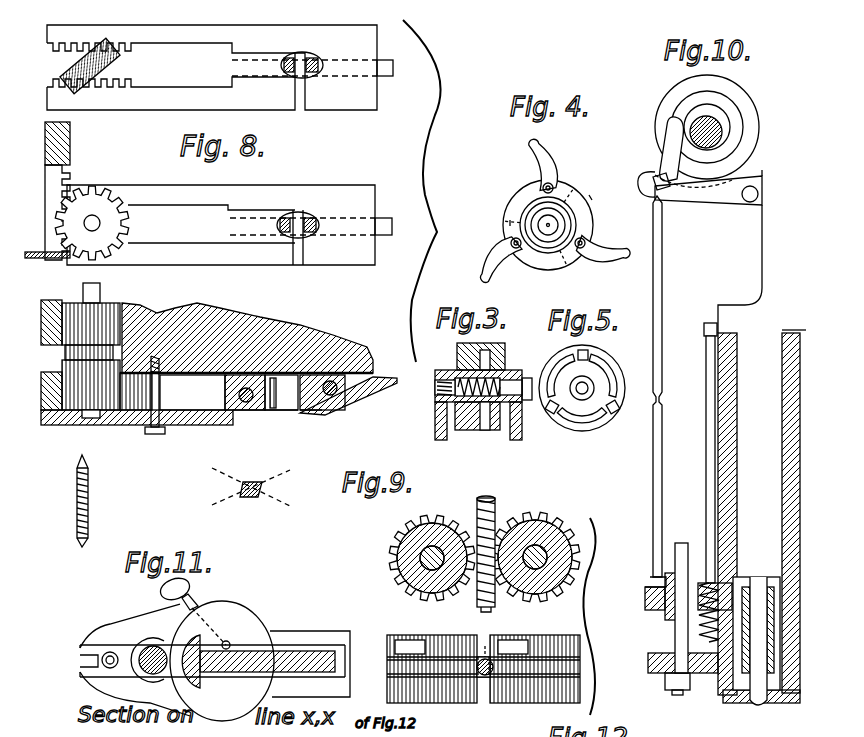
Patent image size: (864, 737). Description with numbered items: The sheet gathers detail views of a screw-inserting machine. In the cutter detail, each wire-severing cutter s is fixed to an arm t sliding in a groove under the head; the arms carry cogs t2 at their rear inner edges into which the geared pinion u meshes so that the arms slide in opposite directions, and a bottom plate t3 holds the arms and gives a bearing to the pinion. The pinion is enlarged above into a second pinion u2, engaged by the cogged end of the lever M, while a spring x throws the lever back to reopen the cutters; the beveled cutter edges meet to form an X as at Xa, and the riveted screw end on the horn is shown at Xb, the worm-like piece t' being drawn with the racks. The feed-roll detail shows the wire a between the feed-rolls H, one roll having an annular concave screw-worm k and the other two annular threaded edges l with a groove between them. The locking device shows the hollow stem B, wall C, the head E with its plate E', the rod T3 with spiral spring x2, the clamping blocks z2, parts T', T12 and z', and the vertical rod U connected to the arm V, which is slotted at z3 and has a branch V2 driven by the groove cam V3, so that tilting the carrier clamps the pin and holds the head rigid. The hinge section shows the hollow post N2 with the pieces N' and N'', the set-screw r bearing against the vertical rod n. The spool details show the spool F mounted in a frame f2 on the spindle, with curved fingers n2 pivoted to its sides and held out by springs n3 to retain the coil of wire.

In FIG. 8, the arm t is at (220, 217).
In FIG. 8, the worm screw t' is at (71, 65).
In FIG. 8, the cogs t2 is at (135, 205).
In FIG. 8, the bottom plate t3 is at (137, 427).
In FIG. 8, the lever M is at (70, 130).
In FIG. 8, the geared pinion u is at (91, 298).
In FIG. 8, the second pinion u2 is at (102, 277).
In FIG. 8, the spring x is at (38, 254).
In FIG. 8, the wire-severing cutters s is at (336, 404).
In FIG. 8, the X-shaped cutting-edges Xa is at (266, 472).
In FIG. 8, the riveted fastening Xb is at (97, 501).
In FIG. 9, the feed-rolls H is at (473, 602).
In FIG. 9, the wire a is at (483, 576).
In FIG. 9, the annular threaded edges l is at (400, 588).
In FIG. 9, the annular concave screw-worm k is at (563, 585).
In FIG. 10, the groove cam V3 is at (707, 127).
In FIG. 10, the branch V2 is at (672, 137).
In FIG. 10, the arm V is at (700, 190).
In FIG. 10, the slot z3 is at (663, 190).
In FIG. 10, the bracket plate E' is at (752, 269).
In FIG. 10, the vertical rod U is at (662, 330).
In FIG. 10, the hollow stem B is at (737, 475).
In FIG. 10, the outer wall C is at (799, 511).
In FIG. 10, the rod T3 is at (713, 445).
In FIG. 10, the blocks z2 is at (704, 600).
In FIG. 10, the stem T' is at (683, 609).
In FIG. 10, the bearing block T12 is at (645, 598).
In FIG. 10, the spring seat z' is at (651, 620).
In FIG. 10, the spiral spring x2 is at (700, 641).
In FIG. 11, the head E is at (215, 661).
In FIG. 11, the cam N' is at (177, 653).
In FIG. 11, the hollow post N2 is at (154, 672).
In FIG. 11, the clamp ring N'' is at (132, 669).
In FIG. 11, the set-screw r is at (179, 592).
In FIG. 11, the vertical rod n is at (218, 628).
In FIG. 14, the spool F is at (575, 195).
In FIG. 13, the spool F is at (470, 432).
In FIG. 15, the spool F is at (570, 386).
In FIG. 14, the curved fingers n2 is at (555, 210).
In FIG. 15, the curved fingers n2 is at (584, 390).
In FIG. 14, the springs n3 is at (558, 237).
In FIG. 13, the frame f2 is at (522, 410).